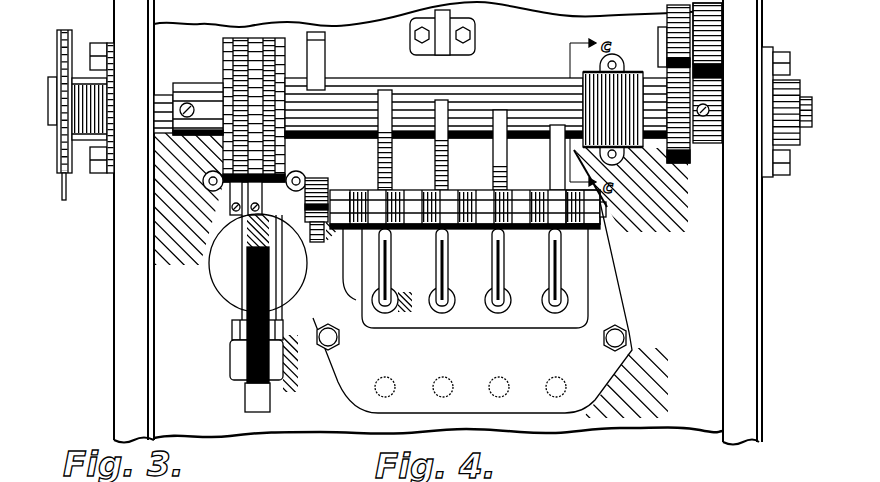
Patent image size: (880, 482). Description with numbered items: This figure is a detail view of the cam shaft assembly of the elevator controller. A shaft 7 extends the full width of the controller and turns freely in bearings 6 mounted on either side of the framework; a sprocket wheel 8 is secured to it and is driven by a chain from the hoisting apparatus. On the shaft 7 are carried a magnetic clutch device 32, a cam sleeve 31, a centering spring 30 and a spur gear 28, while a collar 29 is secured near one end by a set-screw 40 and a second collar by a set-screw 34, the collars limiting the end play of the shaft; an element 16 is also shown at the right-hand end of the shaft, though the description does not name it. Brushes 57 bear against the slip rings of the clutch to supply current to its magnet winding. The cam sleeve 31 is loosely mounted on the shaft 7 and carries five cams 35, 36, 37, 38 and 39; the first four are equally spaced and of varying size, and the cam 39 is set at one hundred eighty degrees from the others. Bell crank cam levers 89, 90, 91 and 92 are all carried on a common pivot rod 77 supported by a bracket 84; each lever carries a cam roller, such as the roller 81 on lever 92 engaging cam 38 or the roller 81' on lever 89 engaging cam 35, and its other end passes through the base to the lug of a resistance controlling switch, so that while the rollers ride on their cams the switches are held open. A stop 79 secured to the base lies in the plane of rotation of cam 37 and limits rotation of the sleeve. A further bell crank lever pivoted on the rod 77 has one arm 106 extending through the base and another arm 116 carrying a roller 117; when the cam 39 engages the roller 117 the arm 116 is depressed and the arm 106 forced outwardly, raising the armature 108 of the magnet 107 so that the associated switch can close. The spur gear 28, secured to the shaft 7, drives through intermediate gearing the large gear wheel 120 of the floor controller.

The bearings 6 is at (105, 44).
The shaft 7 is at (45, 103).
The sprocket wheel 8 is at (64, 200).
The bearing bushing 16 is at (768, 48).
The spur gear 28 is at (682, 163).
The collar 29 is at (700, 147).
The centering spring 30 is at (621, 68).
The cam sleeve 31 is at (495, 80).
The magnetic clutch device 32 is at (238, 32).
The set-screw 34 is at (188, 118).
The cam 35 is at (552, 163).
The cam 36 is at (493, 163).
The cam 37 is at (436, 162).
The cam 38 is at (378, 163).
The cam 39 is at (184, 84).
The set-screw 40 is at (706, 115).
The brushes 57 is at (236, 198).
The pivot rod 77 is at (603, 203).
The stop 79 is at (443, 33).
The cam roller 81 is at (465, 201).
The cam roller 81' is at (583, 228).
The bracket 84 is at (472, 307).
The bell crank cam lever 89 is at (532, 236).
The bell crank cam lever 90 is at (474, 236).
The bell crank cam lever 91 is at (418, 238).
The bell crank cam lever 92 is at (382, 241).
The arm of bell crank lever 106 is at (320, 283).
The magnet 107 is at (232, 291).
The armature 108 is at (250, 389).
The arm of bell crank lever 116 is at (308, 197).
The roller 117 is at (291, 180).
The gear wheel 120 is at (712, 24).